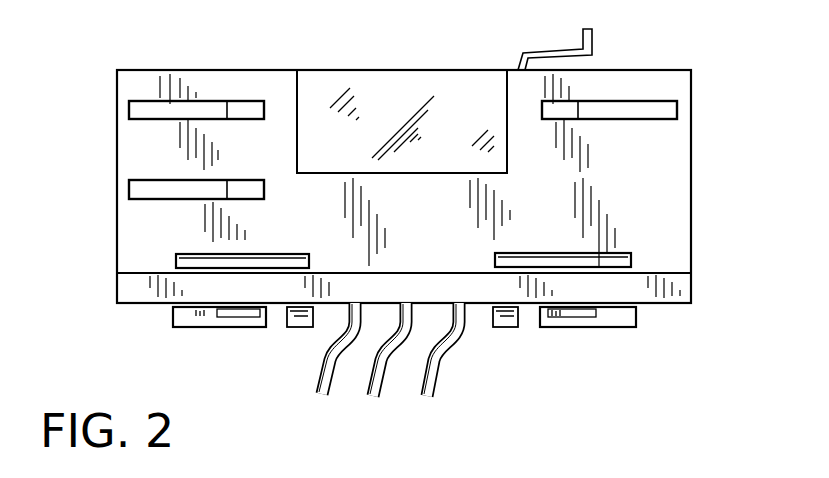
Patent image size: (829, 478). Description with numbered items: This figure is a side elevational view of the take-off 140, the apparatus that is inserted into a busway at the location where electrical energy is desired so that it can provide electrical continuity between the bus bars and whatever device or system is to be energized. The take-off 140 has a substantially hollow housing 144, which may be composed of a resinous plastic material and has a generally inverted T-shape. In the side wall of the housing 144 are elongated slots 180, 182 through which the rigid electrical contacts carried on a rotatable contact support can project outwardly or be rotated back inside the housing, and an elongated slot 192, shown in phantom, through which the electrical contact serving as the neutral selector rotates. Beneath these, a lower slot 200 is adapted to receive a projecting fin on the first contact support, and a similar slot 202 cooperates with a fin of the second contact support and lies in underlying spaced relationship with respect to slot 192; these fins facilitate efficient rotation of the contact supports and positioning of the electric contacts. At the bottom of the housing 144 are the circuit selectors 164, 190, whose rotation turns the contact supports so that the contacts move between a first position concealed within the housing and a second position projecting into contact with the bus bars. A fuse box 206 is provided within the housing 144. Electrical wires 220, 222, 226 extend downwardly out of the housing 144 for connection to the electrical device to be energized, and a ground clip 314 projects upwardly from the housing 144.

The take-off 140 is at (652, 60).
The fuse box 206 is at (387, 83).
The ground clip 314 is at (544, 49).
The elongated slot 180 is at (173, 101).
The elongated slot 182 is at (146, 181).
The elongated slot 192 is at (658, 101).
The lower slot 200 is at (192, 254).
The slot 202 is at (617, 253).
The housing 144 is at (440, 237).
The circuit selector 164 is at (198, 327).
The circuit selector 190 is at (602, 328).
The electrical wire 220 is at (322, 375).
The electrical wire 222 is at (368, 387).
The electrical wire 226 is at (437, 371).